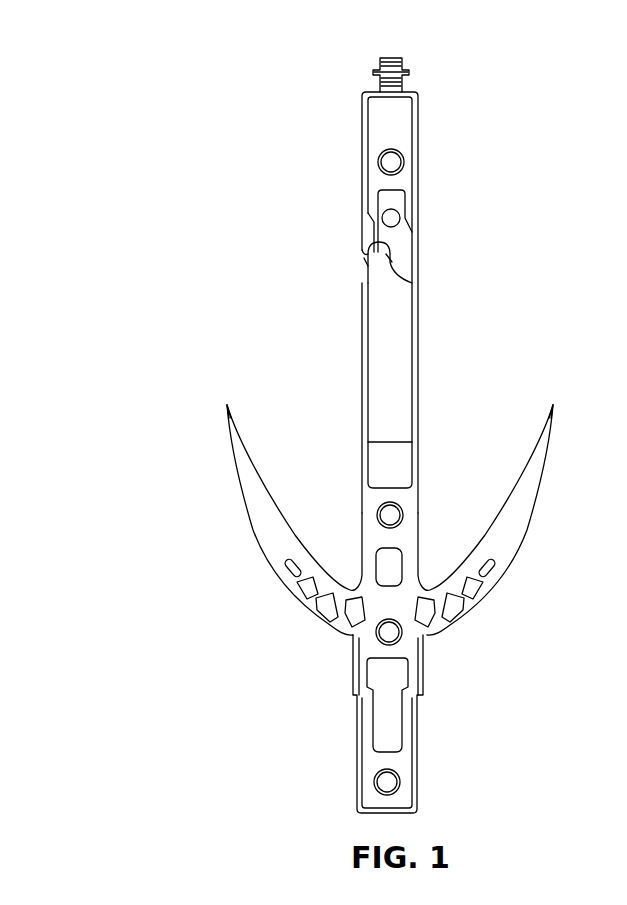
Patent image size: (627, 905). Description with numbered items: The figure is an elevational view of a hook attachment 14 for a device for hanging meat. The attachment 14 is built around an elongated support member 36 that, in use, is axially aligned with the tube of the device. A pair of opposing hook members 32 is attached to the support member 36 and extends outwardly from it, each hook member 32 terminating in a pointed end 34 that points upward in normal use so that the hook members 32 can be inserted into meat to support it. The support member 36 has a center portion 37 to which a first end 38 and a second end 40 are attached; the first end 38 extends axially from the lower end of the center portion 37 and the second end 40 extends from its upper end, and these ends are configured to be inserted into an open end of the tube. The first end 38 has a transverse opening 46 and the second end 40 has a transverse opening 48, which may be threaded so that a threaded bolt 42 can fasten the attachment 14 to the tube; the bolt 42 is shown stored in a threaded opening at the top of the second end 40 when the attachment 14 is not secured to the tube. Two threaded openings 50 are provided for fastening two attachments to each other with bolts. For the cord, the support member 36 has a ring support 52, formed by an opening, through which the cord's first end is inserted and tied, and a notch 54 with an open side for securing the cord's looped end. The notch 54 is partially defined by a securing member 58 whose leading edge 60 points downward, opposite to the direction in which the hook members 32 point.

The attachment 14 is at (120, 82).
The hook members 32 is at (250, 503).
The pointed end 34 is at (228, 400).
The elongated support member 36 is at (358, 357).
The center portion 37 is at (403, 422).
The first end 38 is at (355, 809).
The second end 40 is at (424, 130).
The threaded bolt 42 is at (400, 58).
The opening 46 is at (391, 782).
The opening 48 is at (395, 162).
The threaded openings 50 is at (394, 515).
The ring support 52 is at (395, 218).
The notch 54 is at (393, 257).
The securing member 58 is at (361, 250).
The leading edge 60 is at (368, 262).